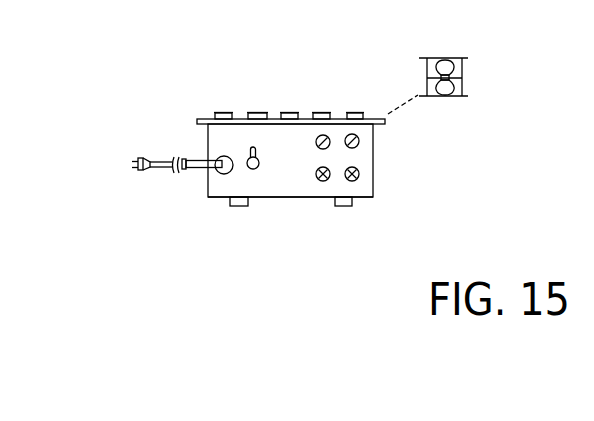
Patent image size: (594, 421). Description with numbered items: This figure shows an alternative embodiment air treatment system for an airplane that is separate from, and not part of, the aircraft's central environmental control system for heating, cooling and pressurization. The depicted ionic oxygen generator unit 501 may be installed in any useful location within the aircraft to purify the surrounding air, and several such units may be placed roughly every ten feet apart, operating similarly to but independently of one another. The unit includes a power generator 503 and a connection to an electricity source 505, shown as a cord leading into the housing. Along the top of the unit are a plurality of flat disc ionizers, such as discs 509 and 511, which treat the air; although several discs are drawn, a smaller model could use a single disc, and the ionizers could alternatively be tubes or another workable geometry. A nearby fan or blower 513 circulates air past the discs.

The ionic oxygen generator unit 501 is at (373, 160).
The power generator 503 is at (208, 187).
The connection to an electricity source 505 is at (197, 158).
The flat disc ionizer 509 is at (254, 112).
The flat disc ionizer 511 is at (319, 112).
The fan or blower 513 is at (443, 58).